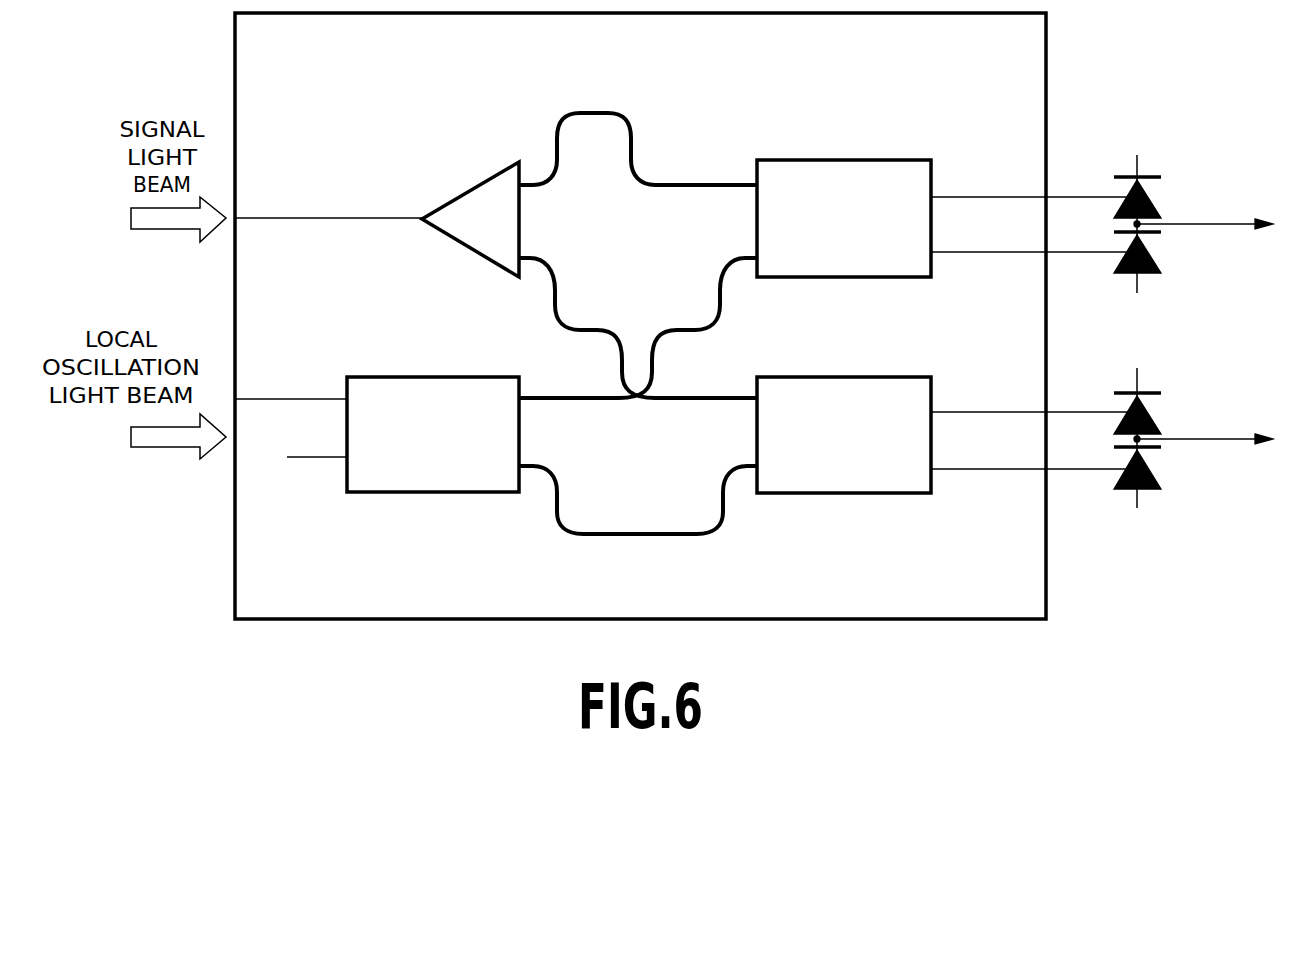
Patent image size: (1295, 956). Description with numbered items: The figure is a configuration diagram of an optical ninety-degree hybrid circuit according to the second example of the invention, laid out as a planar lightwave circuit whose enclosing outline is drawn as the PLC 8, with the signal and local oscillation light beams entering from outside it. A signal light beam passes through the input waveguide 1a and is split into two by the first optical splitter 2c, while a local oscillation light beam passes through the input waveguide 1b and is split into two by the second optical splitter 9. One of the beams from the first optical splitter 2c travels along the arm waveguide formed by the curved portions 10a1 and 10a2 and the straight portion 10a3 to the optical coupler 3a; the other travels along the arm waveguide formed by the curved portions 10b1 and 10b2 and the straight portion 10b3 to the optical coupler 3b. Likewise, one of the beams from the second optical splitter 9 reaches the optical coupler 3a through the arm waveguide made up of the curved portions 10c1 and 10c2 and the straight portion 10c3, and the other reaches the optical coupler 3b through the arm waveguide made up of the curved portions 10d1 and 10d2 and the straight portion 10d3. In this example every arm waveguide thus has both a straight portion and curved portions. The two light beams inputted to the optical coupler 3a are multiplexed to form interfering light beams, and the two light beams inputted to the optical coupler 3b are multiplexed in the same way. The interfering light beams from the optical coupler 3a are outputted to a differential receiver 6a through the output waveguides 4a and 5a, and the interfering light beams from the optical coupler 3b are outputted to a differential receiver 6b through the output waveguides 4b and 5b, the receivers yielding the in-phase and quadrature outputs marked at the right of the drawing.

The input waveguide 1a is at (302, 218).
The input waveguide 1b is at (277, 399).
The first optical splitter 2c is at (465, 187).
The optical coupler 3a is at (842, 160).
The optical coupler 3b is at (842, 377).
The output waveguide 4a is at (963, 197).
The output waveguide 4b is at (963, 252).
The output waveguide 5a is at (963, 412).
The output waveguide 5b is at (963, 469).
The differential receiver 6a is at (1201, 207).
The differential receiver 6b is at (1204, 422).
The optical waveguide substrate 8 is at (1046, 95).
The second optical splitter 9 is at (435, 377).
The curved portion 10a1 is at (565, 120).
The curved portion 10a2 is at (615, 120).
The straight portion 10a3 is at (693, 185).
The curved portion 10b1 is at (602, 328).
The curved portion 10b2 is at (547, 258).
The straight portion 10b3 is at (707, 397).
The curved portion 10c1 is at (728, 262).
The curved portion 10c2 is at (670, 328).
The straight portion 10c3 is at (572, 397).
The curved portion 10d1 is at (730, 465).
The curved portion 10d2 is at (550, 465).
The straight portion 10d3 is at (643, 533).